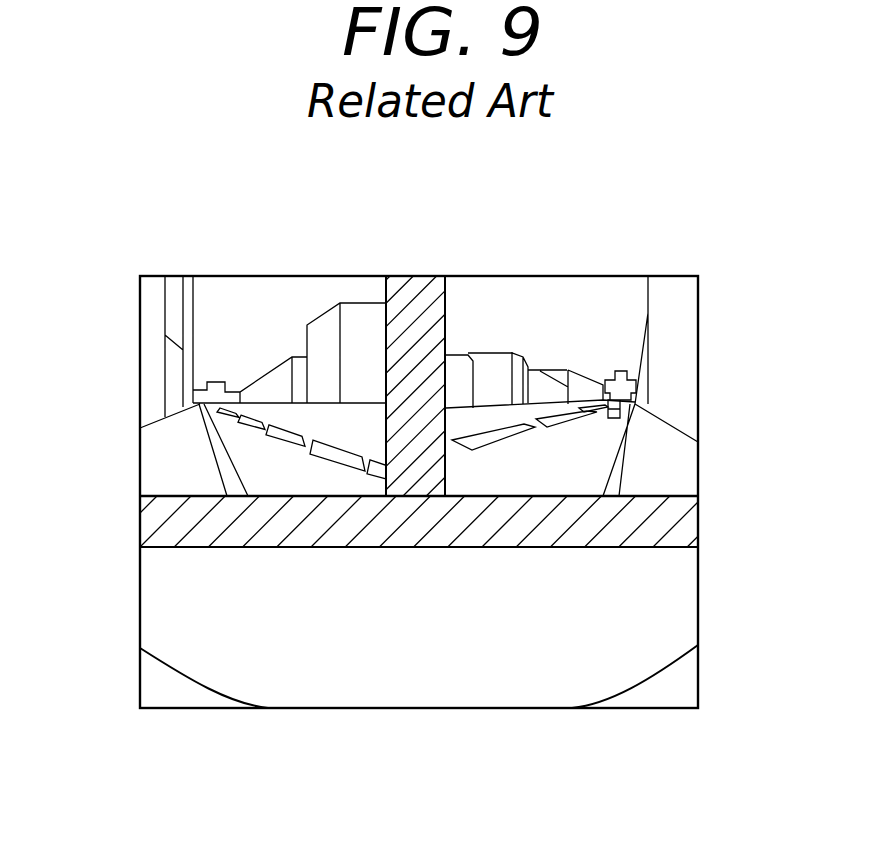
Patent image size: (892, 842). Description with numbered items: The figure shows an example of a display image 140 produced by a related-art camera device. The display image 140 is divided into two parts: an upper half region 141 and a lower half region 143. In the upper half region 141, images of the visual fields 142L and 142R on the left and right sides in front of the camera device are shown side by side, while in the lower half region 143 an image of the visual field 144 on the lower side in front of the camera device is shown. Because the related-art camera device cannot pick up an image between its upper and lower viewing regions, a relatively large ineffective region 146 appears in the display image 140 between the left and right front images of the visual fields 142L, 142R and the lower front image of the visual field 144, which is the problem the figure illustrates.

The display image 140 is at (550, 274).
The upper half region 141 is at (466, 340).
The visual field on the left side 142L is at (273, 302).
The visual field on the right side 142R is at (613, 292).
The lower half region 143 is at (466, 673).
The visual field on the lower side 144 is at (457, 690).
The ineffective region 146 is at (213, 541).